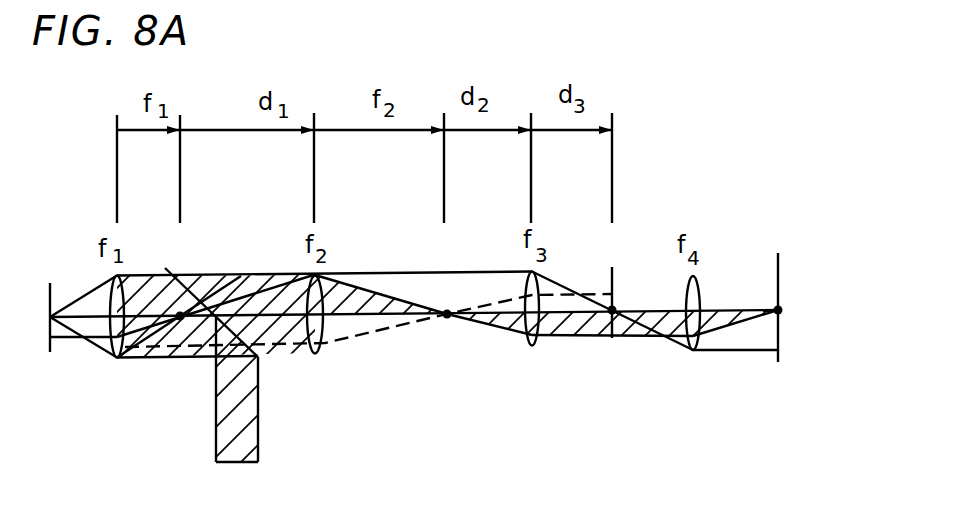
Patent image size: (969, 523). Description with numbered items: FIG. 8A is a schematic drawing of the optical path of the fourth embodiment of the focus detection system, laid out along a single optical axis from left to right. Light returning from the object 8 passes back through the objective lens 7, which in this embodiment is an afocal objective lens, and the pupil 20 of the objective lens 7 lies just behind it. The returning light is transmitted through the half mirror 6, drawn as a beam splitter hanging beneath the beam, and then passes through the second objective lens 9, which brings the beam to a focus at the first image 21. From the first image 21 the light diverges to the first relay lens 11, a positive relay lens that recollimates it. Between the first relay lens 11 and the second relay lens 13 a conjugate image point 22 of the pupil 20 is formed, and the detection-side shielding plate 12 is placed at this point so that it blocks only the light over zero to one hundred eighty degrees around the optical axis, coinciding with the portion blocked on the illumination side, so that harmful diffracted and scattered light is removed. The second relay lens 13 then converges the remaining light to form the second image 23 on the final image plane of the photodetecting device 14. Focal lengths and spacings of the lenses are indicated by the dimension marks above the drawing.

The object 8 is at (50, 350).
The objective lens 7 is at (117, 359).
The pupil of the objective lens 20 is at (180, 320).
The half mirror 6 is at (258, 358).
The second objective lens 9 is at (318, 352).
The first image 21 is at (447, 318).
The first relay lens 11 is at (532, 345).
The detection-side shielding plate 12 is at (614, 276).
The conjugate image point 22 is at (612, 314).
The second relay lens 13 is at (694, 350).
The photodetecting device 14 is at (778, 362).
The second image 23 is at (779, 292).